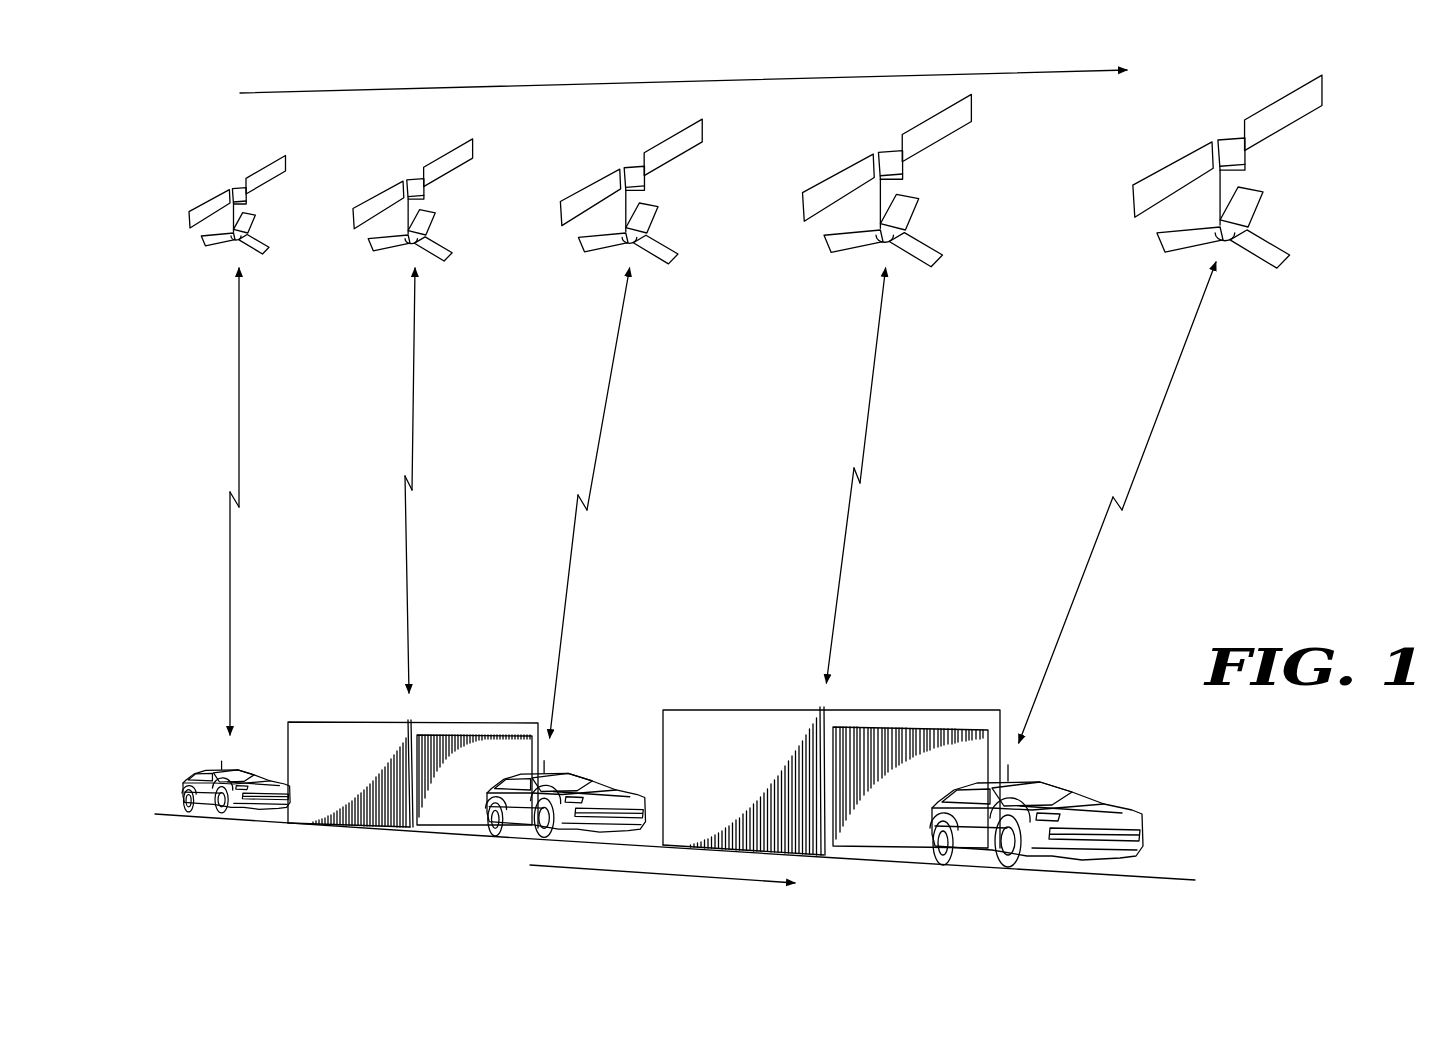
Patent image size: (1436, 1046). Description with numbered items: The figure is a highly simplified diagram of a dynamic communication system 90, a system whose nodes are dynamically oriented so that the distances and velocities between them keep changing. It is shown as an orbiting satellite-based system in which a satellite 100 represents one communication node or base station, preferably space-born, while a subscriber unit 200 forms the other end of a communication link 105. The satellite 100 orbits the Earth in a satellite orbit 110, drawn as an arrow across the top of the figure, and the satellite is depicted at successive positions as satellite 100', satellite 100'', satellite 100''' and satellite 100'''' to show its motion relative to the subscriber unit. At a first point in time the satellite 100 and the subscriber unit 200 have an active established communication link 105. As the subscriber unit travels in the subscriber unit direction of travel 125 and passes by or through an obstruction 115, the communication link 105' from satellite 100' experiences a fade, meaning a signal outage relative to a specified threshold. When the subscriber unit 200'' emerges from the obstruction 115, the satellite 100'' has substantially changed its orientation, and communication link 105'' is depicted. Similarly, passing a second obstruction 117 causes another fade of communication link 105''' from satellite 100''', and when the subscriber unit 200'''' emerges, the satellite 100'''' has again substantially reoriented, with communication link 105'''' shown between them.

The dynamic communication system 90 is at (1268, 589).
The satellite 100 is at (271, 198).
The satellite 100' is at (451, 193).
The satellite 100'' is at (672, 187).
The satellite 100''' is at (933, 178).
The satellite 100'''' is at (1276, 169).
The communication link 105 is at (268, 501).
The communication link 105' is at (445, 480).
The communication link 105'' is at (621, 503).
The communication link 105''' is at (892, 475).
The communication link 105'''' is at (1141, 502).
The satellite orbit 110 is at (683, 81).
The obstruction 115 is at (352, 720).
The obstruction 117 is at (745, 707).
The subscriber unit direction of travel 125 is at (668, 877).
The subscriber unit 200 is at (207, 780).
The subscriber unit 200'' is at (565, 787).
The subscriber unit 200'''' is at (1036, 806).